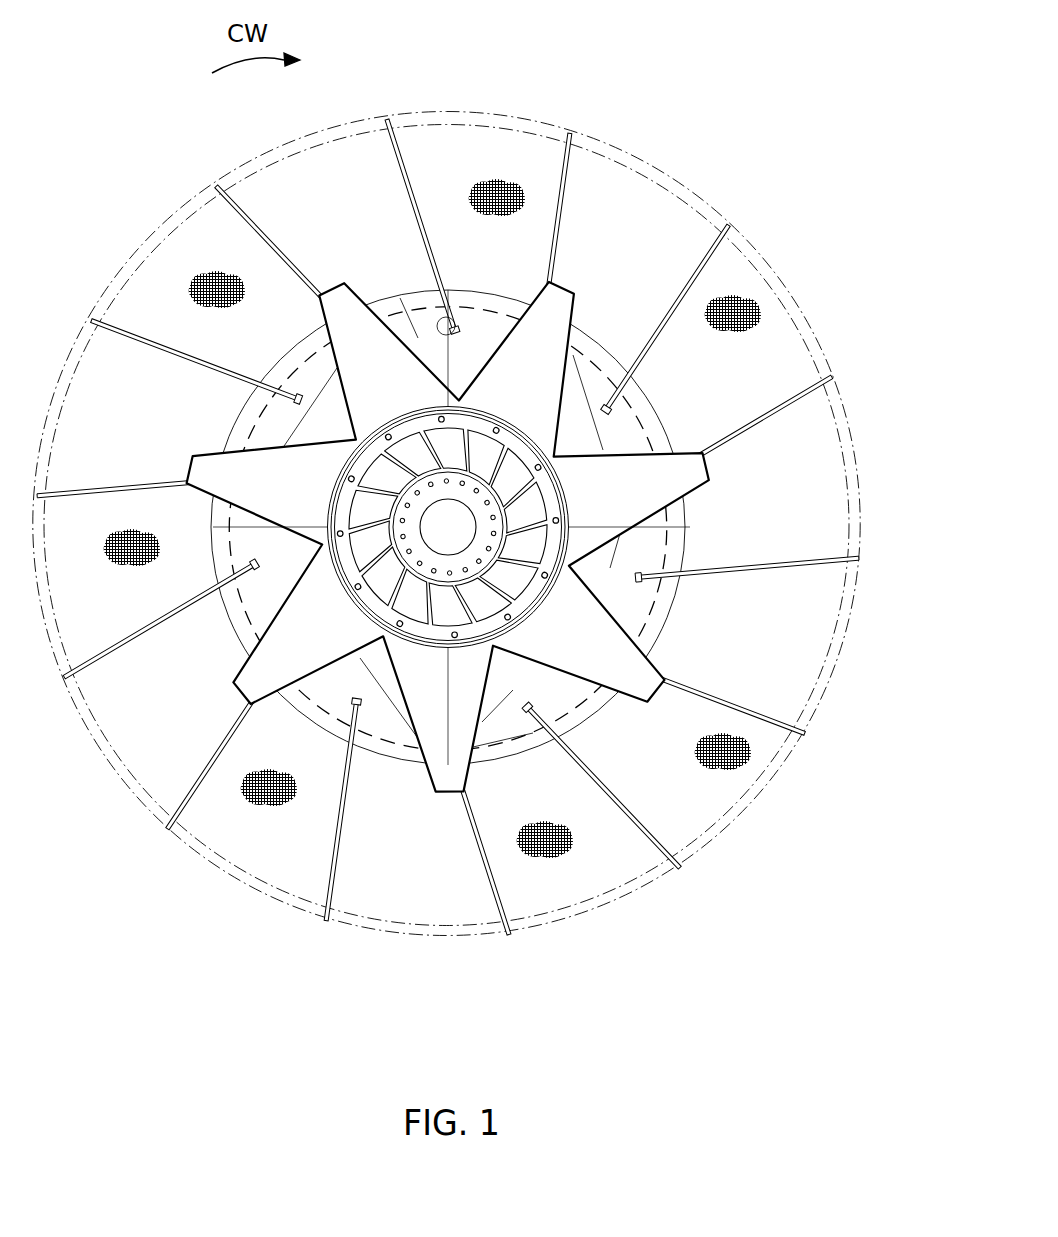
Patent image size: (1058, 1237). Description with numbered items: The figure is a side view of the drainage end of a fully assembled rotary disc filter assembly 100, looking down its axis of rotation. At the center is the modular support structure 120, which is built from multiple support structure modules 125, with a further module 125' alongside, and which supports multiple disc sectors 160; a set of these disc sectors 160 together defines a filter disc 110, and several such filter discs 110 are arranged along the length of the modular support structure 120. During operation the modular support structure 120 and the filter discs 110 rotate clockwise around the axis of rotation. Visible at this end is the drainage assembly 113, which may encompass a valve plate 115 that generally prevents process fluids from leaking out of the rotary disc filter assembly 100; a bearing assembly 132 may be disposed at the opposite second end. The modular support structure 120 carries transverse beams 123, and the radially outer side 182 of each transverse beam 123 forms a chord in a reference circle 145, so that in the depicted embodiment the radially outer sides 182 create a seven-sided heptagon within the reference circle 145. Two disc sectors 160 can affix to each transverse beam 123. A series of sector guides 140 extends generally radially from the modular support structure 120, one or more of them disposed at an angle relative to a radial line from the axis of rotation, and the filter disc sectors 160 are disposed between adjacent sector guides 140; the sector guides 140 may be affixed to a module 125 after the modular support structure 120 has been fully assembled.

The rotary disc filter assembly 100 is at (686, 105).
The filter disc 110 is at (418, 82).
The drainage assembly 113 is at (540, 395).
The valve plate 115 is at (550, 485).
The modular support structure 120 is at (195, 655).
The transverse beam 123 is at (421, 333).
The support structure module 125 is at (504, 582).
The annular groove line portion 125' is at (616, 752).
The bearing assembly 132 is at (593, 338).
The sector guide 140 is at (138, 335).
The reference circle 145 is at (655, 610).
The disc sector 160 is at (505, 183).
The radially outer side 182 is at (482, 315).